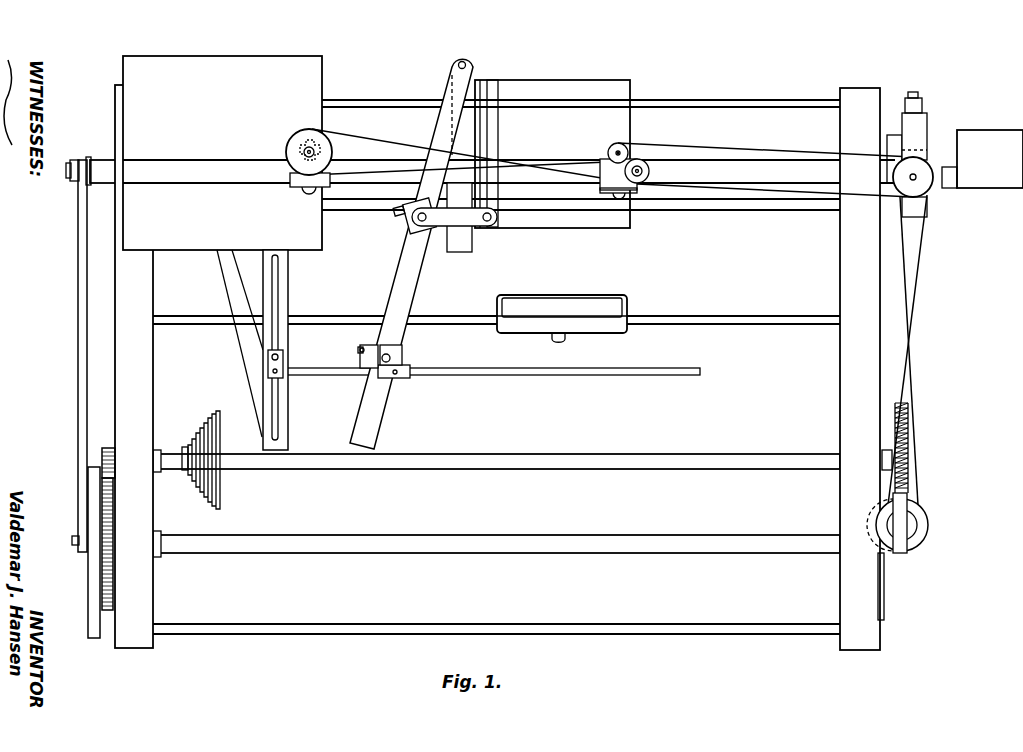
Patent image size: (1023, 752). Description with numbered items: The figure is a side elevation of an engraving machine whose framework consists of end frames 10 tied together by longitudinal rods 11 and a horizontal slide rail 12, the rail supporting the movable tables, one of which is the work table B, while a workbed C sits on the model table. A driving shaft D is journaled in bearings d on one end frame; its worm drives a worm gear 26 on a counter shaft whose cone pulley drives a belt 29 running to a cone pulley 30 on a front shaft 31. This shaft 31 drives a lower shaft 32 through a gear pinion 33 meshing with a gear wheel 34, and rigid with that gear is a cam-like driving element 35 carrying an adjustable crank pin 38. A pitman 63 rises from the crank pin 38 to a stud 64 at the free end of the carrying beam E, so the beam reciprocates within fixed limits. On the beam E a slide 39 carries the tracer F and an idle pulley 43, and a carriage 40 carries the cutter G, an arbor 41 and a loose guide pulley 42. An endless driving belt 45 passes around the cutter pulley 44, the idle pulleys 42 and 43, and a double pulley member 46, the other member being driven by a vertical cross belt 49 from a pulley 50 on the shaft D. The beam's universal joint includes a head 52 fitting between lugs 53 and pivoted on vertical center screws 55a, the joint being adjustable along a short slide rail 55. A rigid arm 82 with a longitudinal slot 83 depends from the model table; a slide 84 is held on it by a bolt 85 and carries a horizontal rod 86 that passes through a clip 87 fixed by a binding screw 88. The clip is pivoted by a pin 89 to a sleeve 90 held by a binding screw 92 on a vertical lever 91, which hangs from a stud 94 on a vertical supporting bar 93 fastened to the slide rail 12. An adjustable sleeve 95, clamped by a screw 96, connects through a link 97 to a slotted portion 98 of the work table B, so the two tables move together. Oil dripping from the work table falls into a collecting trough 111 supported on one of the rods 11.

The end frames 10 is at (150, 386).
The longitudinal rods 11 is at (748, 318).
The slide rail 12 is at (800, 176).
The worm gear 26 is at (910, 442).
The belt 29 is at (184, 474).
The cone pulley 30 is at (207, 500).
The shaft 31 is at (530, 470).
The shaft 32 is at (518, 554).
The gear pinion 33 is at (106, 450).
The gear wheel 34 is at (100, 592).
The driving element 35 is at (92, 571).
The crank pin 38 is at (73, 542).
The slide 39 is at (293, 190).
The carriage 40 is at (607, 188).
The arbor 41 is at (641, 168).
The guide pulley 42 is at (650, 171).
The idle pulley 43 is at (304, 138).
The pulley 44 is at (610, 146).
The endless driving belt 45 is at (740, 154).
The double pulley member 46 is at (925, 170).
The cross belt 49 is at (920, 283).
The pulley 50 is at (915, 530).
The head 52 is at (927, 124).
The lugs 53 is at (922, 104).
The slide rail 55 is at (992, 160).
The center screws 55a is at (913, 94).
The pitman 63 is at (78, 340).
The stud 64 is at (76, 161).
The rigid arm 82 is at (289, 292).
The longitudinal slot 83 is at (279, 345).
The slide 84 is at (284, 376).
The bolt 85 is at (284, 358).
The horizontal rod 86 is at (503, 376).
The clip 87 is at (405, 379).
The binding screw 88 is at (398, 370).
The pin 89 is at (398, 348).
The sleeve 90 is at (380, 347).
The vertical lever 91 is at (412, 272).
The binding screw 92 is at (365, 356).
The vertical supporting bar 93 is at (472, 246).
The stud 94 is at (466, 62).
The adjustable sleeve 95 is at (408, 224).
The clamping screw 96 is at (393, 213).
The link 97 is at (445, 227).
The slotted portion 98 is at (498, 195).
The collecting trough 111 is at (560, 298).
The work table B is at (590, 84).
The workbed C is at (215, 68).
The driving shaft D is at (905, 523).
The carrying beam E is at (218, 184).
The tracer F is at (292, 151).
The cutter G is at (618, 146).
The bearings d is at (900, 555).